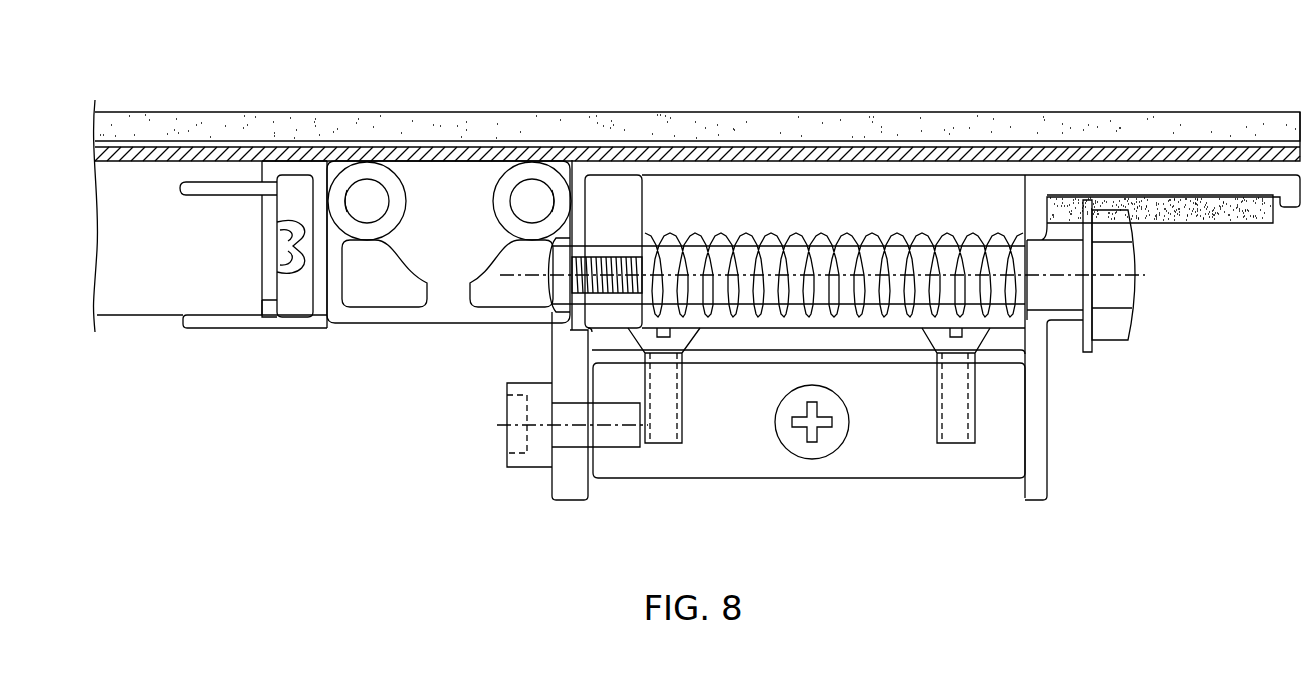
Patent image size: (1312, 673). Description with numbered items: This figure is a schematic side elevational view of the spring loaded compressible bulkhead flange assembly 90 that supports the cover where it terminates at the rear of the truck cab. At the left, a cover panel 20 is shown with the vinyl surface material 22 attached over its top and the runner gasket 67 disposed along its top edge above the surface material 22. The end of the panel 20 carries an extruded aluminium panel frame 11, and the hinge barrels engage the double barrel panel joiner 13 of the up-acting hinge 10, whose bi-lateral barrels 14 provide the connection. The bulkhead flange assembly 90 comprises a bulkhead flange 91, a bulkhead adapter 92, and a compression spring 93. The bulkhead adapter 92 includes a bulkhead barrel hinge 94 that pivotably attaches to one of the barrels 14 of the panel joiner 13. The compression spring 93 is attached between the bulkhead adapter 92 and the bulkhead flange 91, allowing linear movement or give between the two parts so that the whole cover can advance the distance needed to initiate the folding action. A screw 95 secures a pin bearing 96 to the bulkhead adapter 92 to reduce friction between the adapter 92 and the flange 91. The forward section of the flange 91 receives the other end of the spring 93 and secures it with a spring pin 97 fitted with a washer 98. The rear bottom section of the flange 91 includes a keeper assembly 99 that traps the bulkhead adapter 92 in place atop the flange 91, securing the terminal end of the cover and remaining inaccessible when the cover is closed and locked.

The up-acting hinge 10 is at (331, 392).
The panel frame 11 is at (215, 325).
The double barrel panel joiner 13 is at (448, 312).
The bi-lateral barrels 14 is at (400, 207).
The panel 20 is at (135, 178).
The vinyl surface material 22 is at (203, 150).
The runner gasket 67 is at (298, 124).
The compressible bulkhead flange assembly 90 is at (1013, 67).
The bulkhead flange 91 is at (1038, 492).
The bulkhead adapter 92 is at (748, 172).
The compression spring 93 is at (778, 240).
The bulkhead barrel hinge 94 is at (537, 165).
The screw 95 is at (600, 262).
The pin bearing 96 is at (597, 190).
The spring pin 97 is at (1127, 262).
The washer 98 is at (1087, 300).
The keeper assembly 99 is at (560, 490).